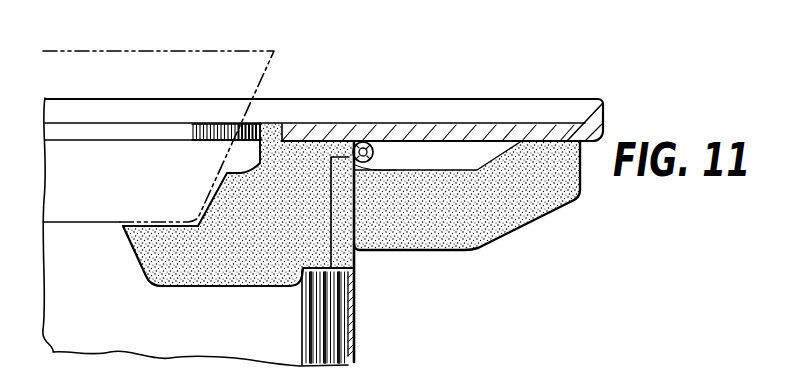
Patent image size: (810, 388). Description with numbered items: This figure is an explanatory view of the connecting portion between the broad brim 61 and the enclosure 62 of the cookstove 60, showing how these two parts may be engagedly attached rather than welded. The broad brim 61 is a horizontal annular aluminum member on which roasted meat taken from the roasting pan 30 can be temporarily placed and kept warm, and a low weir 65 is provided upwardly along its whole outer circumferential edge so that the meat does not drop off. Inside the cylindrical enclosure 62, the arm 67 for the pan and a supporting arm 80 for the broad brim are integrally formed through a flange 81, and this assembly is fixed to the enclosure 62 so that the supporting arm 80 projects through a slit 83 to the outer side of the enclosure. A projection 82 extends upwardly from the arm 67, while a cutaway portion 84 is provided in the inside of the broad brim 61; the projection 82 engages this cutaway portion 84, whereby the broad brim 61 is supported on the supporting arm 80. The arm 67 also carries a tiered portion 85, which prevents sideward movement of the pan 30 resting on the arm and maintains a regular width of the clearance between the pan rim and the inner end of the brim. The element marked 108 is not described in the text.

The roasting pan 30 is at (160, 50).
The cookstove 60 is at (369, 351).
The broad brim 61 is at (510, 122).
The enclosure 62 is at (358, 307).
The low weir 65 is at (592, 102).
The arm 67 is at (235, 258).
The supporting arm 80 is at (523, 185).
The flange 81 is at (382, 252).
The projection 82 is at (281, 157).
The slit 83 is at (388, 172).
The cutaway portion 84 is at (238, 130).
The tiered portion 85 is at (197, 220).
The element 108 is at (584, 382).